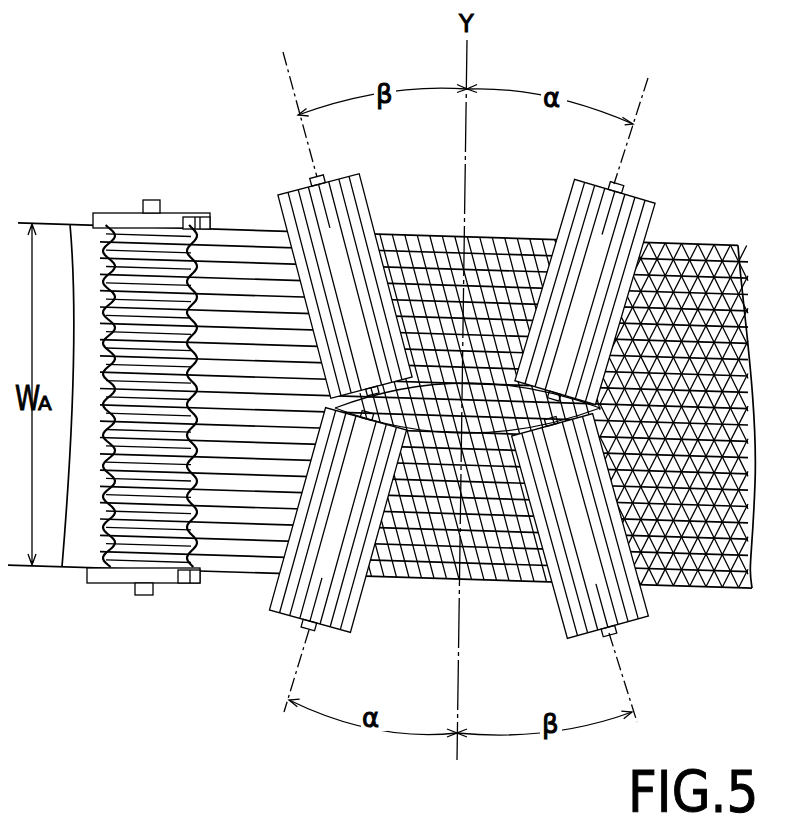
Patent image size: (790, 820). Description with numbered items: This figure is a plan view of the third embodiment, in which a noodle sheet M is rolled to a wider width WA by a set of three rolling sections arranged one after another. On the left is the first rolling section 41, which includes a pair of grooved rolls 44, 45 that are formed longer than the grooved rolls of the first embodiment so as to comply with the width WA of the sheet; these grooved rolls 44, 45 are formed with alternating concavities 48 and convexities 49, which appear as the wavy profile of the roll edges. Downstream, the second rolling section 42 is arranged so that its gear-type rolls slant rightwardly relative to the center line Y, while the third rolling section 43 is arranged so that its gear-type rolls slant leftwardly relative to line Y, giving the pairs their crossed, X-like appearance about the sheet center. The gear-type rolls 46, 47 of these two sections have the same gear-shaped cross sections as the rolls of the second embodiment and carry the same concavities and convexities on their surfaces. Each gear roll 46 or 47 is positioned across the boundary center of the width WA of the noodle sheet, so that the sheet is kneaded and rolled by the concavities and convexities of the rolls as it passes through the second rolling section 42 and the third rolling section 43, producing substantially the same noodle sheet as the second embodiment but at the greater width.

The first rolling section 41 is at (156, 351).
The second rolling section 42 is at (314, 98).
The third rolling section 43 is at (614, 102).
The grooved roll 44 is at (175, 169).
The grooved roll 45 is at (175, 169).
The gear-type roll 46 is at (508, 414).
The gear-type roll 47 is at (462, 406).
The concavities 48 is at (85, 432).
The convexities 49 is at (206, 446).